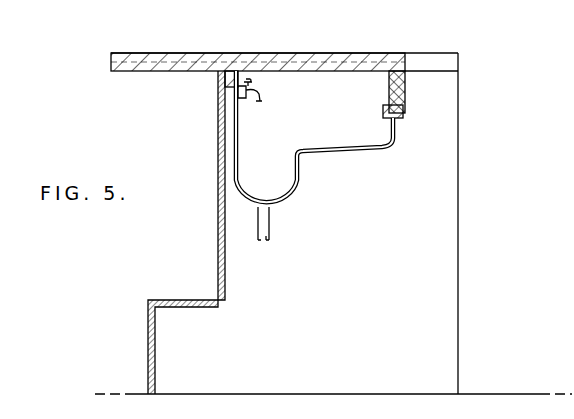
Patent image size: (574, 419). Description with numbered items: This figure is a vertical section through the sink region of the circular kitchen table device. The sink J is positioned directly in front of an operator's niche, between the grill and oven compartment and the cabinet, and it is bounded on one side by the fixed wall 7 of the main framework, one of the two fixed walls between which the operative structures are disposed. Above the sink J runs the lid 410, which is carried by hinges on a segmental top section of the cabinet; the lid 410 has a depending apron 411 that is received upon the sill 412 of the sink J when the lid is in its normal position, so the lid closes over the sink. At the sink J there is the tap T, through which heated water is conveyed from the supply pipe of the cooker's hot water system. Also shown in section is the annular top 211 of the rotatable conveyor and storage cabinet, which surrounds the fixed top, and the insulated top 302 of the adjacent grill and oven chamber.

The annular top 211 is at (151, 52).
The lid 410 is at (316, 53).
The insulated top 302 is at (441, 62).
The depending apron 411 is at (405, 88).
The sill 412 is at (405, 118).
The fixed wall 7 is at (218, 220).
The sink J is at (314, 155).
The tap T is at (240, 92).